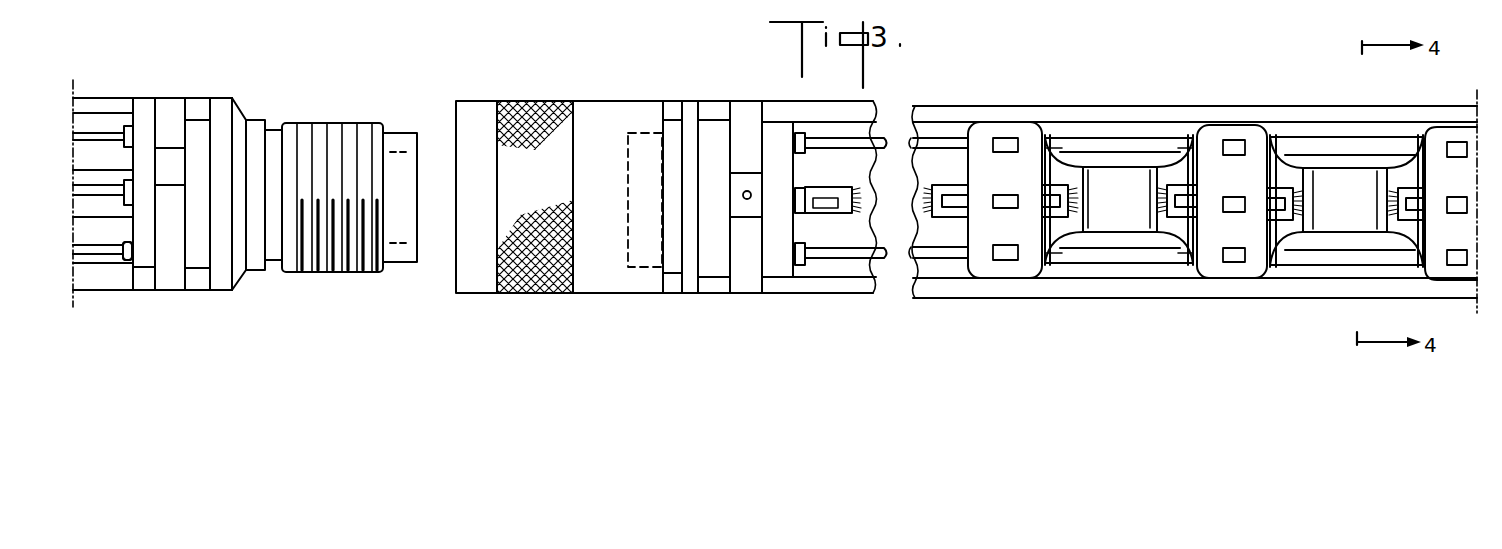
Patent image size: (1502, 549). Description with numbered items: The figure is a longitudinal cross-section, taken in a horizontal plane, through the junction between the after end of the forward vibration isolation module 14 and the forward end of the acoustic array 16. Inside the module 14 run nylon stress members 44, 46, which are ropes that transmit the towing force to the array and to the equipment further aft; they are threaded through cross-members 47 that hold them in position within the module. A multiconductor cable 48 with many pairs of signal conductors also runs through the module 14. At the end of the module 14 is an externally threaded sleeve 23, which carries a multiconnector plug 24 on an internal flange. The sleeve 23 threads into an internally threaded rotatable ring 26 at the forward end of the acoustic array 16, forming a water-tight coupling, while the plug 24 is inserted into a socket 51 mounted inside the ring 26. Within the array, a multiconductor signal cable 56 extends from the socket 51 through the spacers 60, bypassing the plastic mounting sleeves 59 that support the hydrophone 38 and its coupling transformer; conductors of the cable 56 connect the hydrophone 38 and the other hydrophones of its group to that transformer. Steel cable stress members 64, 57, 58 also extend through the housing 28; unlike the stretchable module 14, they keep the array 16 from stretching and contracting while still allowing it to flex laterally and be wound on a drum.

The forward vibration isolation module 14 is at (112, 91).
The nylon stress member 44 is at (112, 133).
The cross-member 47 is at (142, 127).
The nylon stress member 46 is at (90, 258).
The multiconductor cable 48 is at (110, 206).
The externally threaded sleeve 23 is at (307, 130).
The multiconnector plug 24 is at (410, 165).
The internally threaded rotatable ring 26 is at (518, 293).
The socket 51 is at (628, 158).
The steel cable stress member 57 is at (838, 140).
The multiconductor signal cable 56 is at (845, 188).
The steel cable stress member 64 is at (812, 199).
The steel cable stress member 58 is at (852, 253).
The acoustic array 16 is at (1040, 70).
The housing 28 is at (1102, 108).
The plastic mounting sleeve 59 is at (1138, 168).
The spacer 60 is at (1028, 268).
The hydrophone 38 is at (1130, 208).